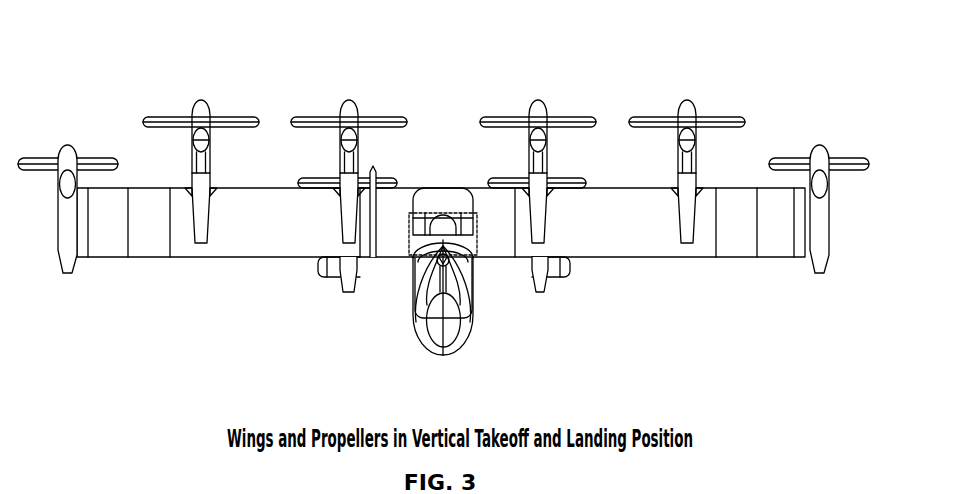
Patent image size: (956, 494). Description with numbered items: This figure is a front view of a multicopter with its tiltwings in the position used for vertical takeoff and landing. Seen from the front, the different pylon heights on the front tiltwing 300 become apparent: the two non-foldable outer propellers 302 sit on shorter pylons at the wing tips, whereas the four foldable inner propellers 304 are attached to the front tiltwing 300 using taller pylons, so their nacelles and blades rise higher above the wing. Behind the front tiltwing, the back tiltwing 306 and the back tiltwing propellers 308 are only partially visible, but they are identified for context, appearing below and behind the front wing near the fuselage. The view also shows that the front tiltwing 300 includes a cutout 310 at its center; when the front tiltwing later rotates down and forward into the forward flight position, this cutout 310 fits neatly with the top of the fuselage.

The front tiltwing 300 is at (223, 257).
The non-foldable outer propeller 302 is at (67, 145).
The foldable inner propeller 304 is at (198, 107).
The back tiltwing 306 is at (538, 292).
The back tiltwing propeller 308 is at (516, 188).
The cutout 310 is at (452, 268).